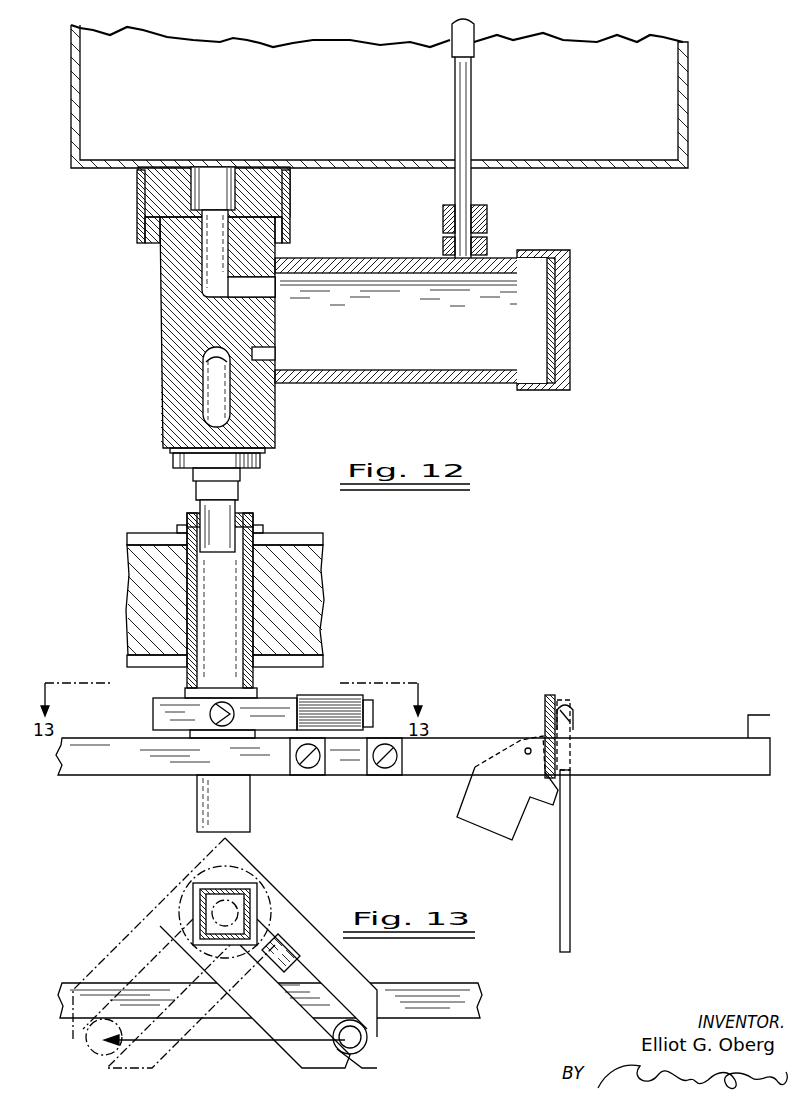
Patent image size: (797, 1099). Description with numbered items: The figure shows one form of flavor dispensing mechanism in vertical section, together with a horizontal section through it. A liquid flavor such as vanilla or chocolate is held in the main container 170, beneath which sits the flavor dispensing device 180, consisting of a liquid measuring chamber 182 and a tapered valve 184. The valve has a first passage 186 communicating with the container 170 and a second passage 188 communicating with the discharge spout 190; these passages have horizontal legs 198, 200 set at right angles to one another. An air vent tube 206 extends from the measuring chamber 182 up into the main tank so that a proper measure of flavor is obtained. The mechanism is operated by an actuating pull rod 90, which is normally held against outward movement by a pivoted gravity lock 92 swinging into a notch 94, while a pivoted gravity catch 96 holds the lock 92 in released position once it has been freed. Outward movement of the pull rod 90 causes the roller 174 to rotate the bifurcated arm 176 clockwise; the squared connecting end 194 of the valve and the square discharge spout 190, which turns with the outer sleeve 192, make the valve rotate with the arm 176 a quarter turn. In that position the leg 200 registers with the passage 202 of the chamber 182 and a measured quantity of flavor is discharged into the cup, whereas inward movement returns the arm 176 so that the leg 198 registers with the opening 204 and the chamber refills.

In FIG. 12, the container 170 is at (688, 90).
In FIG. 12, the air vent tube 206 is at (474, 108).
In FIG. 12, the first passage 186 is at (232, 177).
In FIG. 12, the tapered valve 184 is at (213, 258).
In FIG. 12, the horizontal leg 198 is at (230, 297).
In FIG. 12, the horizontal leg 200 is at (210, 363).
In FIG. 12, the second passage 188 is at (207, 403).
In FIG. 12, the opening 204 is at (283, 295).
In FIG. 12, the passage 202 is at (277, 357).
In FIG. 12, the liquid measuring chamber 182 is at (362, 360).
In FIG. 12, the flavor dispensing device 180 is at (586, 327).
In FIG. 12, the connecting end 194 is at (234, 504).
In FIG. 12, the outer sleeve 192 is at (190, 560).
In FIG. 13, the outer sleeve 192 is at (256, 912).
In FIG. 12, the bifurcated arm 176 is at (276, 710).
In FIG. 13, the bifurcated arm 176 is at (122, 942).
In FIG. 12, the roller 174 is at (357, 711).
In FIG. 13, the roller 174 is at (93, 1055).
In FIG. 12, the discharge spout 190 is at (237, 802).
In FIG. 13, the discharge spout 190 is at (197, 884).
In FIG. 12, the actuating pull rod 90 is at (673, 755).
In FIG. 13, the actuating pull rod 90 is at (453, 1000).
In FIG. 12, the pivoted gravity lock 92 is at (565, 852).
In FIG. 12, the notch 94 is at (583, 757).
In FIG. 12, the pivoted gravity catch 96 is at (515, 799).